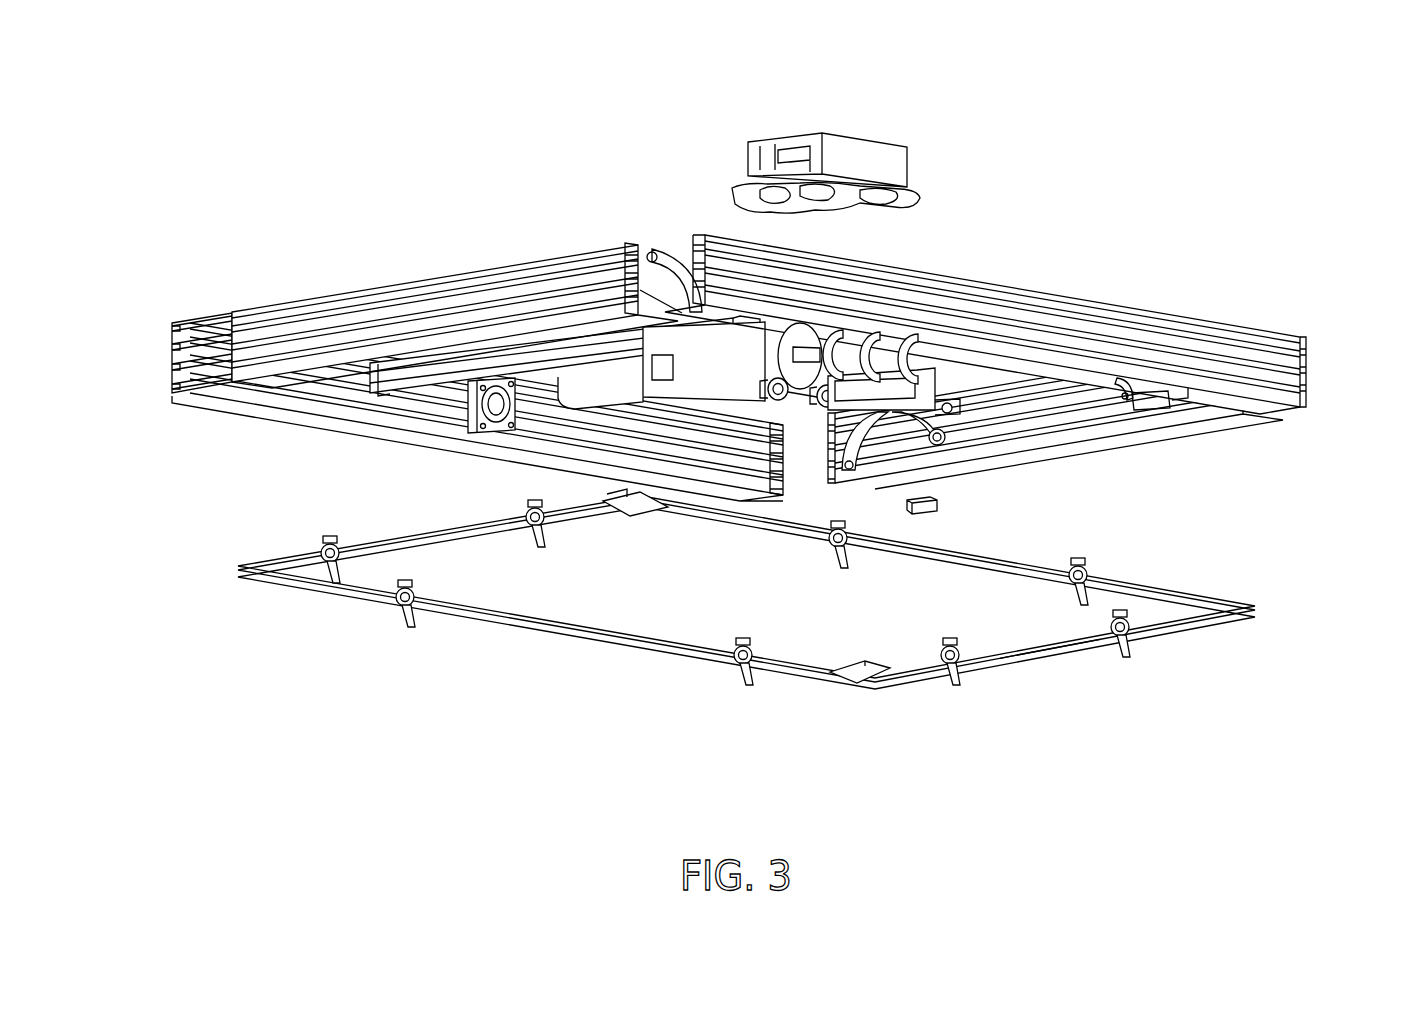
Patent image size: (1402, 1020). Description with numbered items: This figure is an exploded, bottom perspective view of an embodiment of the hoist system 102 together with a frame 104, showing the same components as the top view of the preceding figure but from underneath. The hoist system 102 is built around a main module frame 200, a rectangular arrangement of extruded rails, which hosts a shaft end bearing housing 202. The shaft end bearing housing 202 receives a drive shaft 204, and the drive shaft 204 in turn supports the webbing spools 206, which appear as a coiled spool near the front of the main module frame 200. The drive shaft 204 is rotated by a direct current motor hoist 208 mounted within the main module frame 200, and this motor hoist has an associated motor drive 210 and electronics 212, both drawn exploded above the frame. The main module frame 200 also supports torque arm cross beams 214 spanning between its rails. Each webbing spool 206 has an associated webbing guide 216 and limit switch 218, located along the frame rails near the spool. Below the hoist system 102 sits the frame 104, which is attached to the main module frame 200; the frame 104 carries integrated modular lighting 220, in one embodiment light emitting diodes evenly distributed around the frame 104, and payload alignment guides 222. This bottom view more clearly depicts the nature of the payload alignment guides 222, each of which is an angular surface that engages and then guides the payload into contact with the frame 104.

The hoist system 102 is at (322, 148).
The frame 104 is at (1217, 612).
The main module frame 200 is at (701, 507).
The shaft end bearing housing 202 is at (495, 433).
The drive shaft 204 is at (803, 365).
The webbing spool 206 is at (910, 358).
The direct current motor hoist 208 is at (712, 372).
The motor drive 210 is at (843, 132).
The electronics 212 is at (732, 190).
The torque arm cross beam 214 is at (410, 393).
The webbing guide 216 is at (946, 450).
The limit switch 218 is at (940, 504).
The integrated modular lighting 220 is at (1040, 656).
The payload alignment guide 222 is at (403, 608).